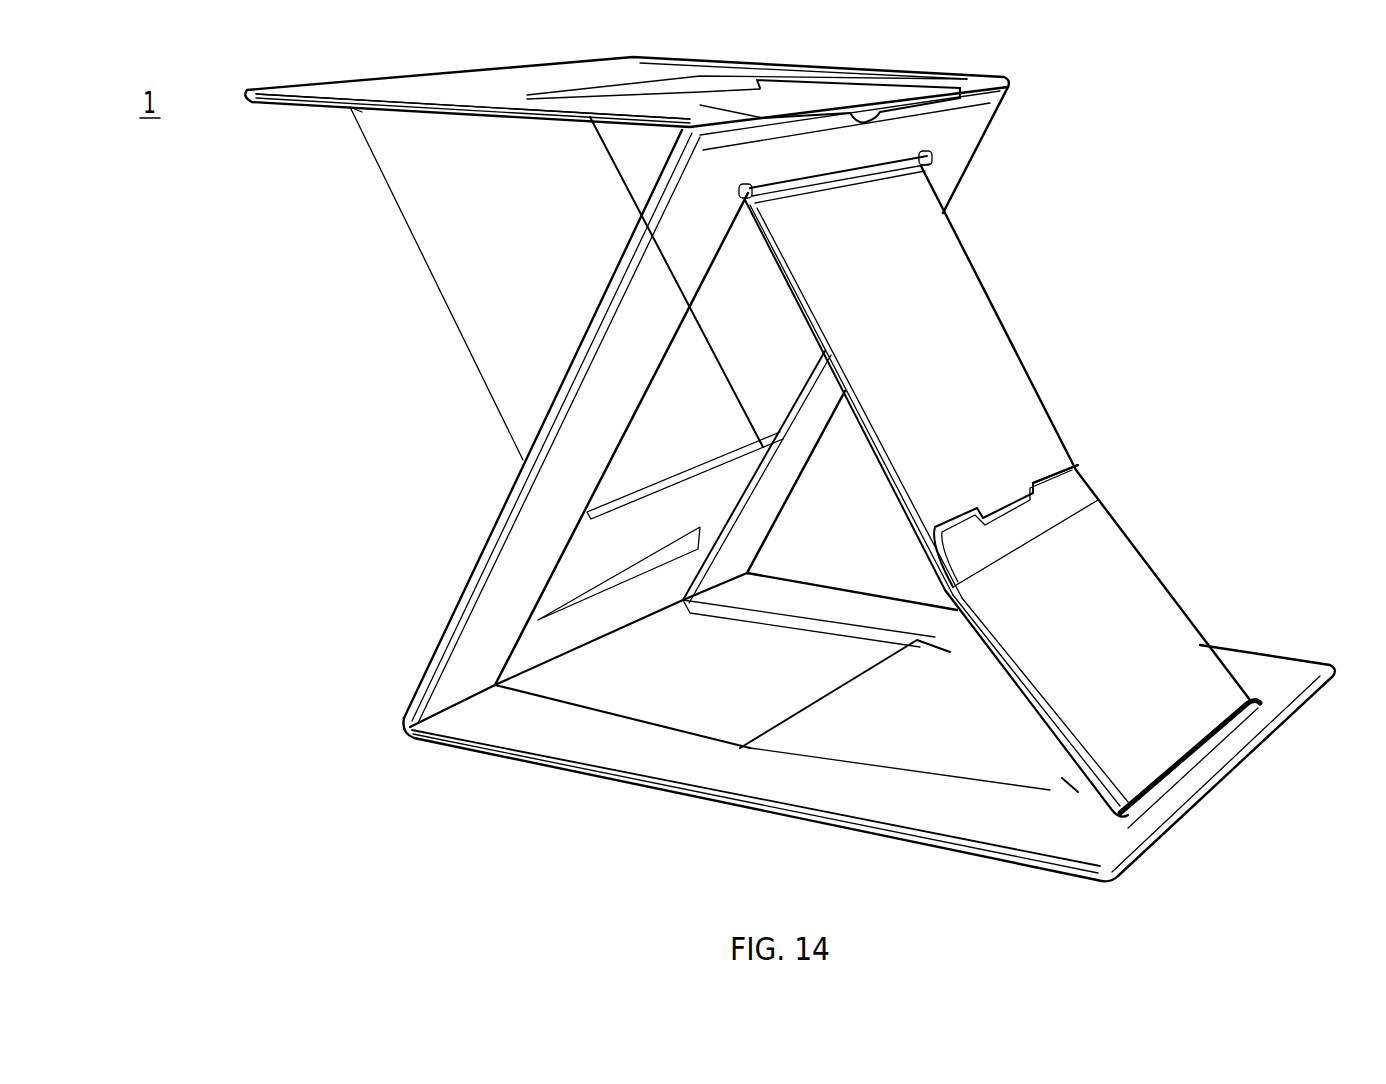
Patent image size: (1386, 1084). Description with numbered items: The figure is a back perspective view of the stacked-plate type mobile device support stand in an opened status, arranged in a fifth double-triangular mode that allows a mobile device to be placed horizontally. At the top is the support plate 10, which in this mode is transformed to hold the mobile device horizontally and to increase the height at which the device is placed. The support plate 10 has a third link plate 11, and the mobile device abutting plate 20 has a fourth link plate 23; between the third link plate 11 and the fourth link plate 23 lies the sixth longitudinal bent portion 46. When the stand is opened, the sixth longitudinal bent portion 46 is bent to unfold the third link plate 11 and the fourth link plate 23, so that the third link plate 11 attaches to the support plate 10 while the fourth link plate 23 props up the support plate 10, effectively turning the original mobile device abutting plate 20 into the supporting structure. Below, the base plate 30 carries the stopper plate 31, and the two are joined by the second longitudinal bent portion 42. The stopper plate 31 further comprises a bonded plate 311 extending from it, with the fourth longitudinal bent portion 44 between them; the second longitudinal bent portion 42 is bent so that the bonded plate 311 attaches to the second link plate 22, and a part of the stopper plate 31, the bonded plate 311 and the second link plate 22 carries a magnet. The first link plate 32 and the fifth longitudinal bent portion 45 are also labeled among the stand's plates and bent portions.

The support plate 10 is at (362, 84).
The third link plate 11 is at (447, 113).
The sixth longitudinal bent portion 46 is at (368, 106).
The mobile device abutting plate 20 is at (496, 598).
The fourth link plate 23 is at (465, 237).
The second link plate 22 is at (1005, 363).
The bonded plate 311 is at (1073, 493).
The fourth longitudinal bent portion 44 is at (1048, 538).
The stopper plate 31 is at (1182, 683).
The second longitudinal bent portion 42 is at (1170, 770).
The fifth longitudinal bent portion 45 is at (1067, 781).
The base plate 30 is at (577, 750).
The first link plate 32 is at (855, 728).